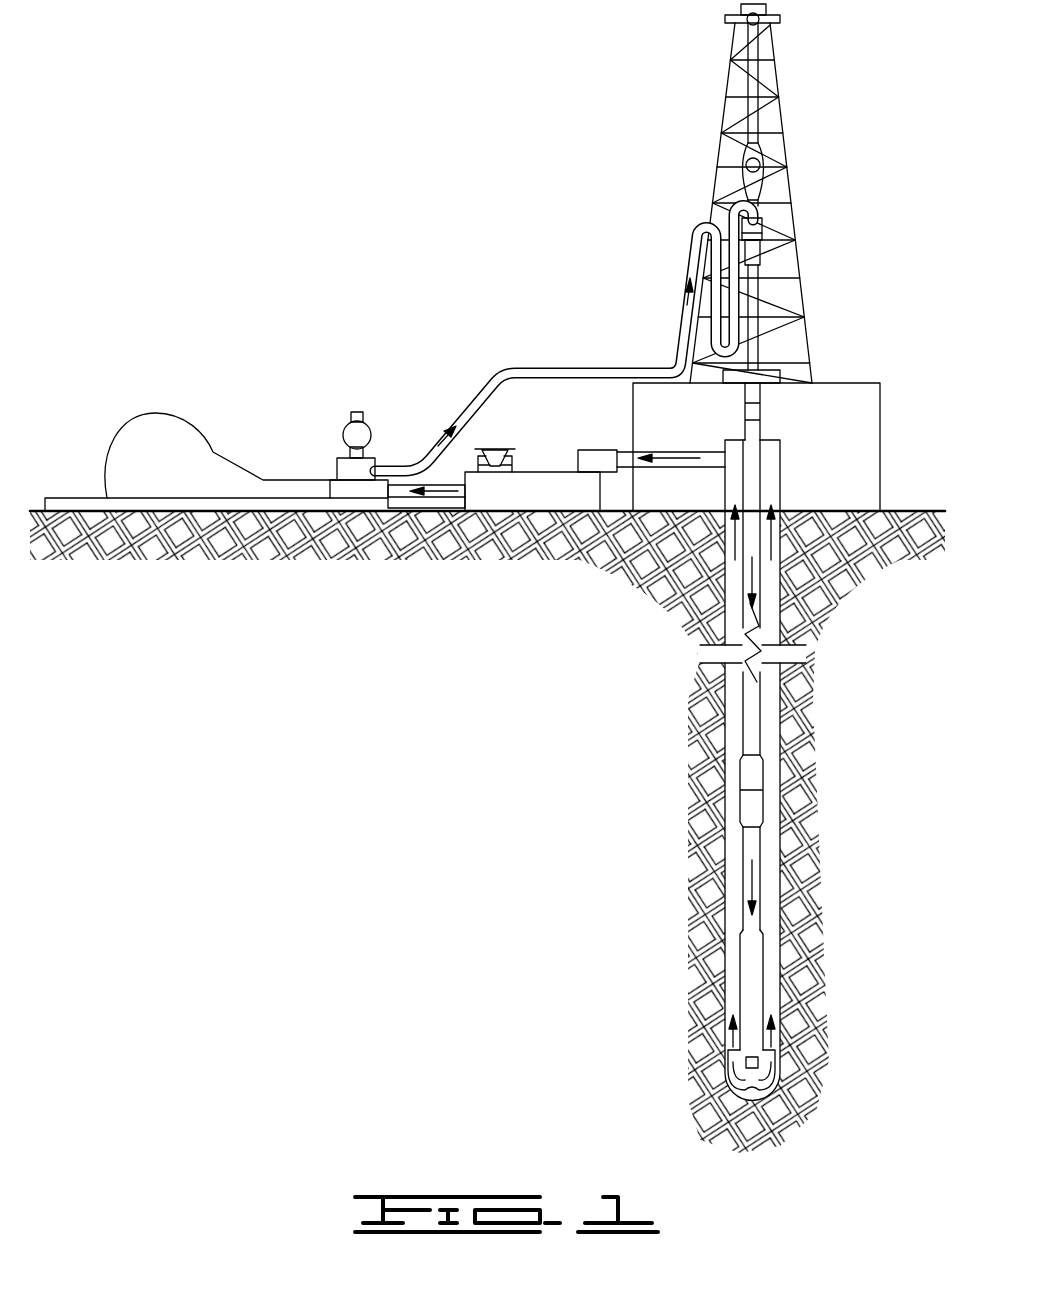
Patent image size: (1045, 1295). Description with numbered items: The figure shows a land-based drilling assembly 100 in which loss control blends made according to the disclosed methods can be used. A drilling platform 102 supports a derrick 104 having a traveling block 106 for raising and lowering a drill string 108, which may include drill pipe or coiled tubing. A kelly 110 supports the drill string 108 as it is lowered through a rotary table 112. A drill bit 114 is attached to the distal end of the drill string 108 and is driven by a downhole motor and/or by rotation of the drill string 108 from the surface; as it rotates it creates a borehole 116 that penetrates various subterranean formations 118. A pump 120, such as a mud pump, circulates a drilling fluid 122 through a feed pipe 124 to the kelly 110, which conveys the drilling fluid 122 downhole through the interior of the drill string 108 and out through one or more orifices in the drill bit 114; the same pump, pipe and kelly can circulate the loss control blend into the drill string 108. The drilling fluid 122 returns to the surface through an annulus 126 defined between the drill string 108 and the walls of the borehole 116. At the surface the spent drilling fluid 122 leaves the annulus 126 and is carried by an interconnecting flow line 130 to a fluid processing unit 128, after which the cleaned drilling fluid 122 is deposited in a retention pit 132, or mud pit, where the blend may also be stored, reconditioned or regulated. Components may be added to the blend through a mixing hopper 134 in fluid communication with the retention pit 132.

The drilling assembly 100 is at (453, 78).
The drilling platform 102 is at (882, 402).
The derrick 104 is at (782, 115).
The traveling block 106 is at (766, 163).
The drill string 108 is at (758, 621).
The kelly 110 is at (752, 285).
The rotary table 112 is at (776, 374).
The drill bit 114 is at (803, 1105).
The borehole 116 is at (790, 730).
The subterranean formations 118 is at (612, 756).
The pump 120 is at (172, 479).
The drilling fluid 122 is at (404, 467).
The feed pipe 124 is at (568, 367).
The annulus 126 is at (770, 883).
The fluid processing unit 128 is at (603, 450).
The flow line 130 is at (705, 468).
The retention pit 132 is at (548, 513).
The mixing hopper 134 is at (500, 449).